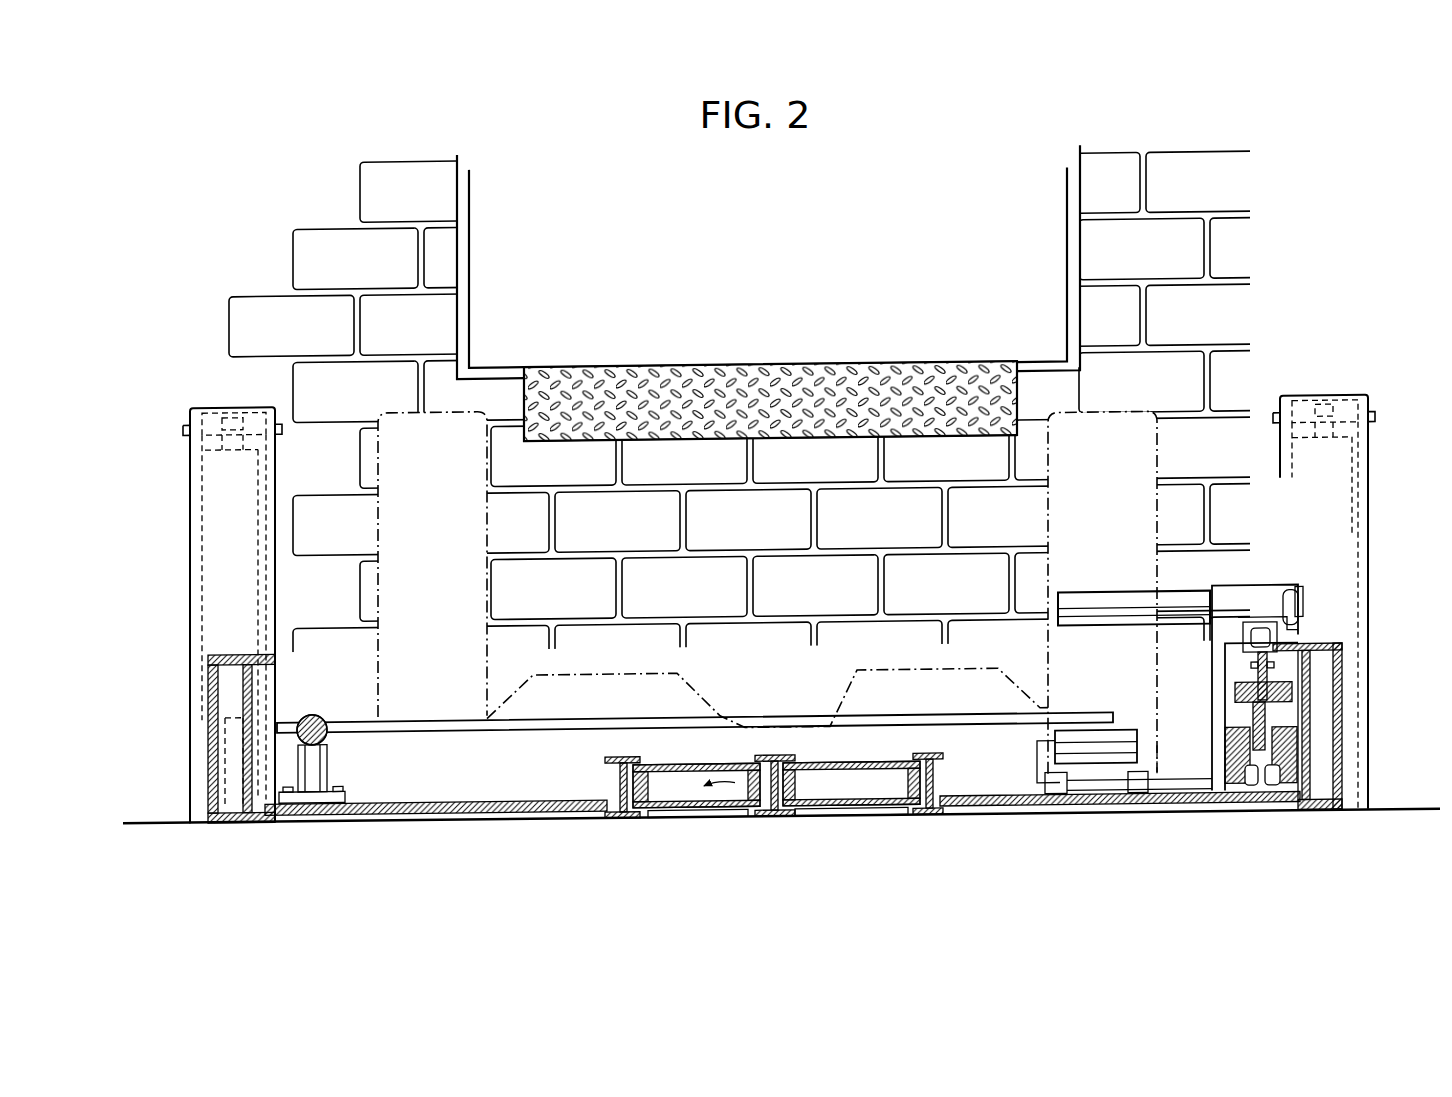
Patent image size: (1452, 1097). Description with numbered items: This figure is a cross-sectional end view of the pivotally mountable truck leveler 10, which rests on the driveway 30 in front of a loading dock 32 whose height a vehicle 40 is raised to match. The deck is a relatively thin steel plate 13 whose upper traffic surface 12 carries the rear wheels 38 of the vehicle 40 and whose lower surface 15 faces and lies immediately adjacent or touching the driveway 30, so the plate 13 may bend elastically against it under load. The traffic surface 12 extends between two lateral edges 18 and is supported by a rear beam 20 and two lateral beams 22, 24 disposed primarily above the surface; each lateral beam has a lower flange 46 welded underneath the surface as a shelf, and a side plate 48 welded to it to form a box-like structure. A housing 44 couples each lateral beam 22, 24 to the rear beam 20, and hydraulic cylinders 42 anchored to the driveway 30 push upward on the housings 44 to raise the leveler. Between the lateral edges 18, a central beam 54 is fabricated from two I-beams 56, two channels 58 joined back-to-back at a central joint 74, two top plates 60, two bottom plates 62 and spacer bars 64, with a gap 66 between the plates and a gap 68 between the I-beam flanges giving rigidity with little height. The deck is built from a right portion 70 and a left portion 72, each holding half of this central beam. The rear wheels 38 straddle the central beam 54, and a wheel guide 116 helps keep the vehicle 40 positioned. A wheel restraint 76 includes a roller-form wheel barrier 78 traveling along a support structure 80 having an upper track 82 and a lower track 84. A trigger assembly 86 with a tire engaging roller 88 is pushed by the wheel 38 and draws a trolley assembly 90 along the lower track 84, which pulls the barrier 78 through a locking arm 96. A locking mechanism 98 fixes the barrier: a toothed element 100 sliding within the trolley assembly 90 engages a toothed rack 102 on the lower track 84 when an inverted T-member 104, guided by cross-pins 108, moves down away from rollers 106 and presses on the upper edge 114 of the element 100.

The leveler 10 is at (262, 326).
The upper traffic surface 12 is at (552, 798).
The steel plate 13 is at (507, 811).
The lower surface 15 is at (370, 811).
The lateral edges 18 is at (247, 801).
The rear beam 20 is at (475, 713).
The lateral beam 22 is at (1328, 788).
The lateral beam 24 is at (243, 651).
The driveway 30 is at (1397, 816).
The loading dock 32 is at (1058, 274).
The rear wheels 38 is at (378, 541).
The vehicle 40 is at (925, 673).
The hydraulic cylinders 42 is at (202, 579).
The housing 44 is at (190, 404).
The lower flange 46 is at (265, 818).
The side plate 48 is at (208, 724).
The central beam 54 is at (634, 740).
The I-beams 56 is at (618, 769).
The channels 58 is at (765, 758).
The top plates 60 is at (680, 763).
The bottom plates 62 is at (764, 775).
The spacer bars 64 is at (658, 793).
The gap 66 is at (740, 817).
The gap 68 is at (973, 807).
The right portion 70 is at (813, 591).
The left portion 72 is at (690, 590).
The central joint 74 is at (752, 735).
The wheel restraint 76 is at (1250, 572).
The wheel barrier 78 is at (1120, 598).
The support structure 80 is at (1337, 611).
The upper track 82 is at (1293, 592).
The lower track 84 is at (1262, 807).
The trigger assembly 86 is at (1038, 764).
The tire engaging roller 88 is at (1105, 730).
The trolley assembly 90 is at (1213, 784).
The locking arm 96 is at (1212, 696).
The locking mechanism 98 is at (1287, 744).
The toothed element 100 is at (1225, 727).
The toothed rack 102 is at (1215, 758).
The T-member 104 is at (1255, 620).
The rollers 106 is at (1246, 687).
The cross-pins 108 is at (1302, 649).
The upper edge 114 is at (1245, 704).
The wheel guide 116 is at (318, 713).